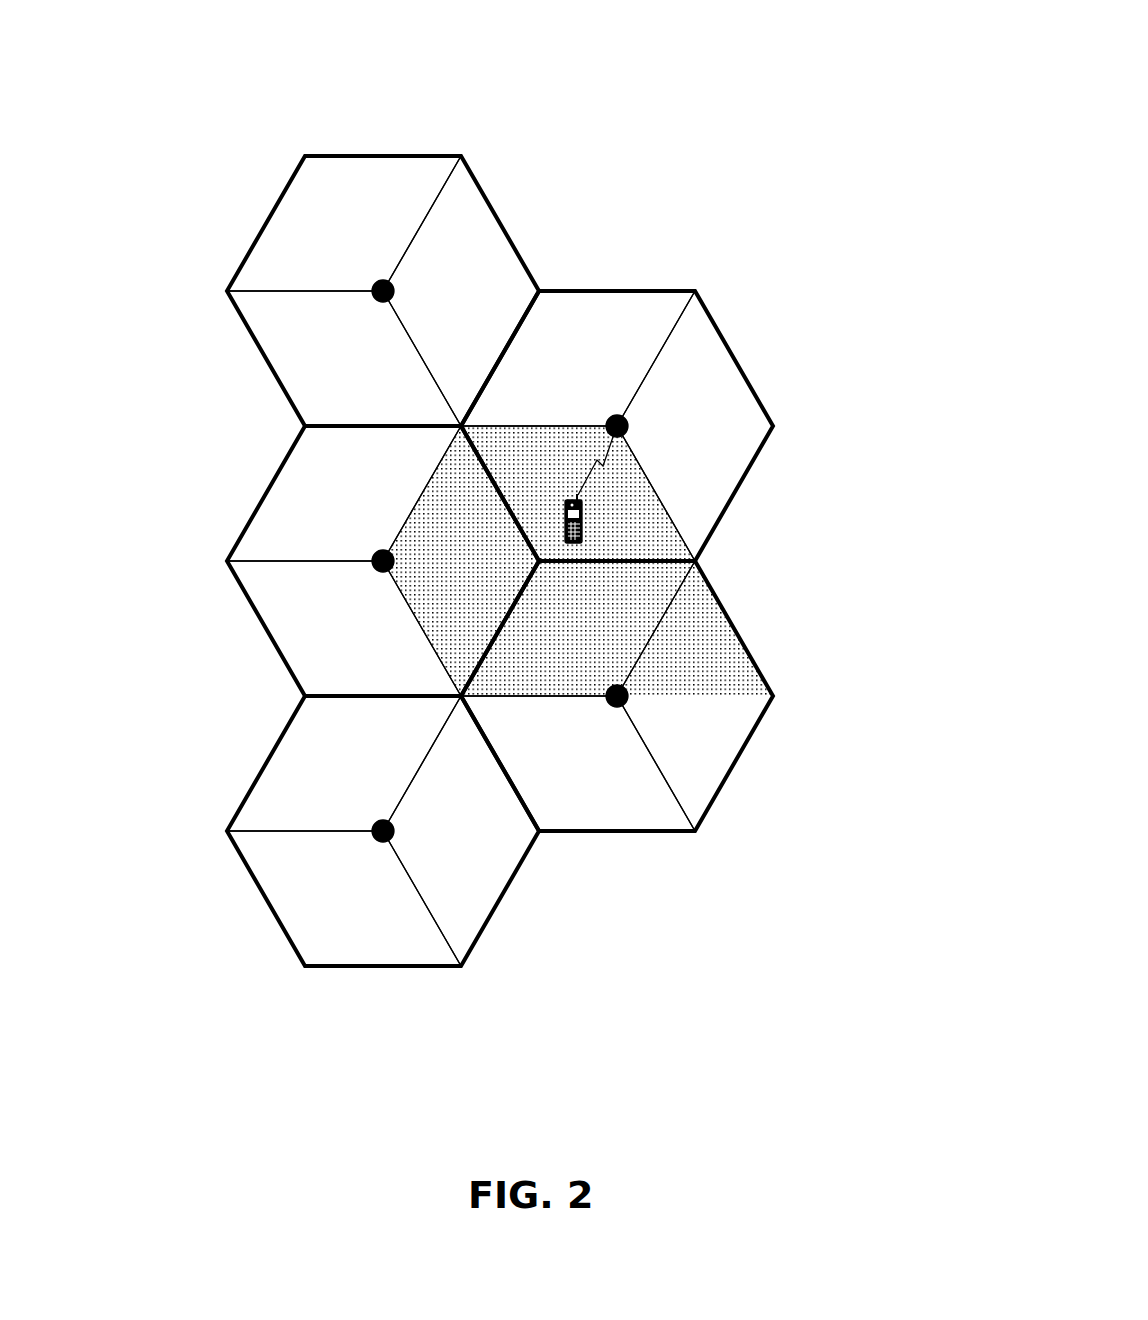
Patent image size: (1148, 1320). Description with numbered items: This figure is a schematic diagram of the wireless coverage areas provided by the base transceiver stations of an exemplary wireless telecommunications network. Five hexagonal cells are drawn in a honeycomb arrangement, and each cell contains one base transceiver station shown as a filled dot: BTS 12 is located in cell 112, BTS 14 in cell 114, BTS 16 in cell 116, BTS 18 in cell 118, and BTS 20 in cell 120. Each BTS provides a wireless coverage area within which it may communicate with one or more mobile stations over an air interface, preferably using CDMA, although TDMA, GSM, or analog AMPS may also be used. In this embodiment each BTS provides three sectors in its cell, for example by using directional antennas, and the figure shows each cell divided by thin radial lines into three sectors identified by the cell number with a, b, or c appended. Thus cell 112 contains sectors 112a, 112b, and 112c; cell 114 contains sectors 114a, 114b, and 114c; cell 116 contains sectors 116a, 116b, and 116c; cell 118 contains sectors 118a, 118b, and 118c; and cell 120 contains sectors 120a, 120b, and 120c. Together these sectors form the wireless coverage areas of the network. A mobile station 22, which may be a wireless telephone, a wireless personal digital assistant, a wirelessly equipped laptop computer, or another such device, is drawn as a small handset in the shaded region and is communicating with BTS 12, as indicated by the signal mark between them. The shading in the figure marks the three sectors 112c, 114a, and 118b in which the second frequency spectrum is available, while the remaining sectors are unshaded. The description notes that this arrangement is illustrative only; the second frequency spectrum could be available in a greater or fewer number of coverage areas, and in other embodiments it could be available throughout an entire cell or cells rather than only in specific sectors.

The base transceiver station 12 is at (628, 424).
The base transceiver station 14 is at (617, 708).
The base transceiver station 16 is at (374, 826).
The base transceiver station 18 is at (372, 561).
The base transceiver station 20 is at (372, 291).
The mobile station 22 is at (583, 505).
The cell 112 is at (644, 353).
The sector 112a is at (613, 364).
The sector 112b is at (734, 478).
The sector 112c is at (560, 464).
The cell 114 is at (696, 696).
The sector 114a is at (611, 629).
The sector 114b is at (731, 712).
The sector 114c is at (590, 756).
The cell 116 is at (407, 884).
The sector 116a is at (374, 769).
The sector 116b is at (496, 844).
The sector 116c is at (393, 934).
The cell 118 is at (306, 561).
The sector 118a is at (394, 484).
The sector 118b is at (499, 574).
The sector 118c is at (393, 664).
The cell 120 is at (408, 218).
The sector 120a is at (394, 207).
The sector 120b is at (484, 296).
The sector 120c is at (385, 387).